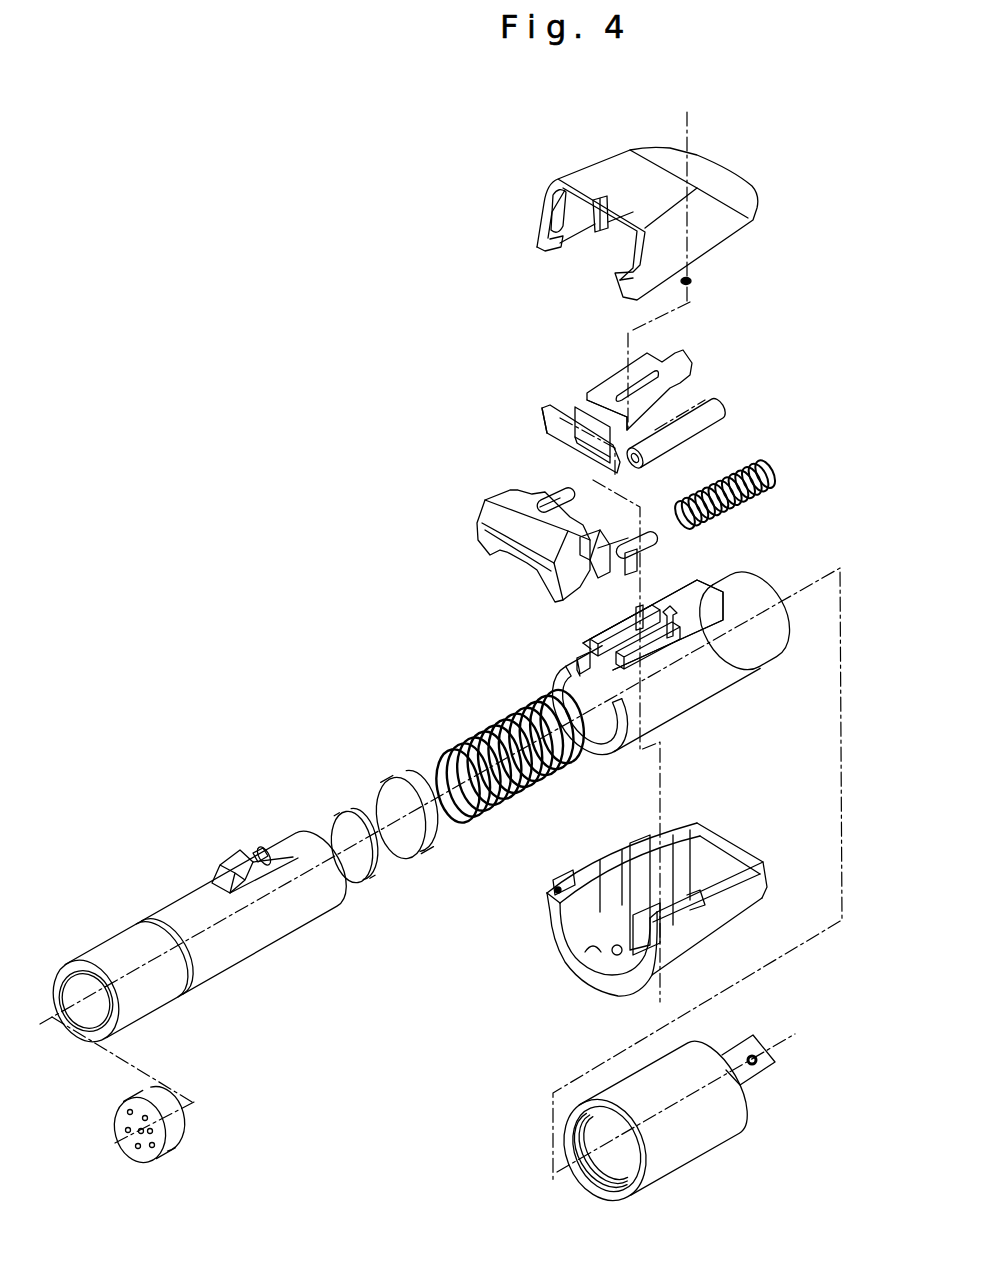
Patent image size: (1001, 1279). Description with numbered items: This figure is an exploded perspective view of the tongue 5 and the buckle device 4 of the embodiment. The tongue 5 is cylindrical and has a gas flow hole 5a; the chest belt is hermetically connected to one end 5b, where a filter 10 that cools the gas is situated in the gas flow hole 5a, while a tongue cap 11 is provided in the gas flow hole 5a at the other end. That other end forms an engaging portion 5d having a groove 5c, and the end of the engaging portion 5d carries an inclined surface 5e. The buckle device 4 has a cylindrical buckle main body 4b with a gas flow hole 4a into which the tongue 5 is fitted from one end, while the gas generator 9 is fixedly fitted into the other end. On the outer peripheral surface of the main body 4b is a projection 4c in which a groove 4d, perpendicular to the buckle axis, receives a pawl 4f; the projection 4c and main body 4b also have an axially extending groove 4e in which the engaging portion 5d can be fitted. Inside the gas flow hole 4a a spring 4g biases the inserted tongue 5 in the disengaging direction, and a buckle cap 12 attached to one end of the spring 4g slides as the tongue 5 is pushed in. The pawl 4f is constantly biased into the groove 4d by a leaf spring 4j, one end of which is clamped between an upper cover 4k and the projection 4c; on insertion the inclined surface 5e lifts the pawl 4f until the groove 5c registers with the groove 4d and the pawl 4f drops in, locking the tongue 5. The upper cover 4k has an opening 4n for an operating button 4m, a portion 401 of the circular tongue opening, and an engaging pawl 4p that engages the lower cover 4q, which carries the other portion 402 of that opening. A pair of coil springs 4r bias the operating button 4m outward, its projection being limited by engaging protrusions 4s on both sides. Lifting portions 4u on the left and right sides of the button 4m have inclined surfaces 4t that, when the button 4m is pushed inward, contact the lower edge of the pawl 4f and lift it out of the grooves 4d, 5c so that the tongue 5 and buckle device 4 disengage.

The buckle device 4 is at (468, 467).
The gas flow hole 4a is at (600, 733).
The buckle main body 4b is at (702, 693).
The projection 4c is at (715, 588).
The groove 4d is at (617, 616).
The axially extending groove 4e is at (577, 660).
The pawl 4f is at (542, 410).
The spring 4g is at (487, 738).
The spring 4j is at (670, 390).
The upper cover 4k is at (750, 225).
The operating button 4m is at (484, 543).
The opening 4n is at (558, 205).
The engaging pawl 4p is at (690, 283).
The lower cover 4q is at (750, 897).
The coil springs 4r is at (693, 437).
The engaging protrusions 4s is at (637, 563).
The inclined surface 4t is at (550, 502).
The lifting portion 4u is at (630, 572).
The portion of opening 401 is at (557, 252).
The portion of opening 402 is at (593, 962).
The tongue 5 is at (173, 910).
The gas flow hole 5a is at (83, 1007).
The end of tongue 5b is at (107, 957).
The groove 5c is at (258, 848).
The engaging portion 5d is at (233, 857).
The inclined surface 5e is at (275, 847).
The gas generator 9 is at (720, 1133).
The filter 10 is at (173, 1128).
The tongue cap 11 is at (366, 882).
The buckle cap 12 is at (415, 852).